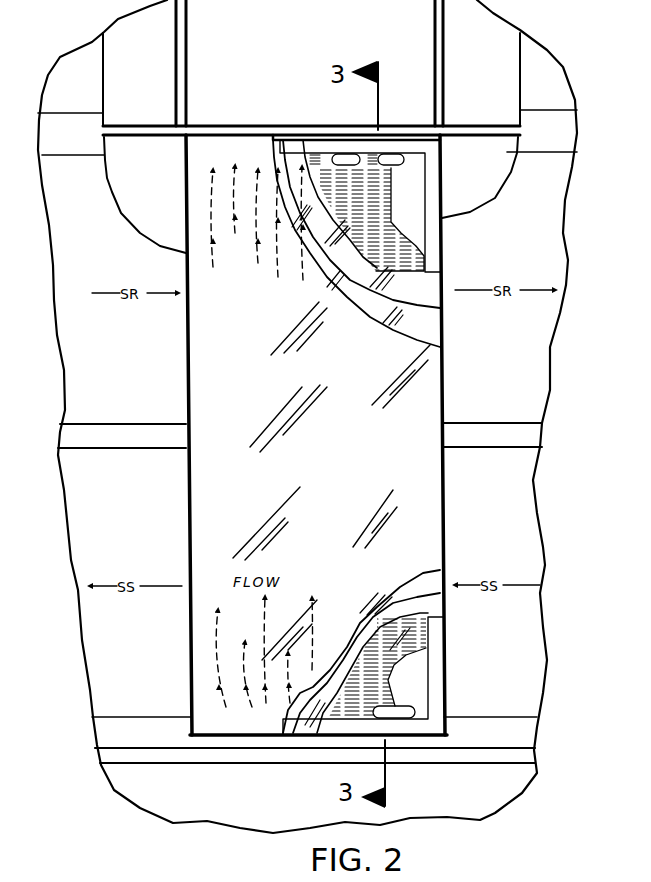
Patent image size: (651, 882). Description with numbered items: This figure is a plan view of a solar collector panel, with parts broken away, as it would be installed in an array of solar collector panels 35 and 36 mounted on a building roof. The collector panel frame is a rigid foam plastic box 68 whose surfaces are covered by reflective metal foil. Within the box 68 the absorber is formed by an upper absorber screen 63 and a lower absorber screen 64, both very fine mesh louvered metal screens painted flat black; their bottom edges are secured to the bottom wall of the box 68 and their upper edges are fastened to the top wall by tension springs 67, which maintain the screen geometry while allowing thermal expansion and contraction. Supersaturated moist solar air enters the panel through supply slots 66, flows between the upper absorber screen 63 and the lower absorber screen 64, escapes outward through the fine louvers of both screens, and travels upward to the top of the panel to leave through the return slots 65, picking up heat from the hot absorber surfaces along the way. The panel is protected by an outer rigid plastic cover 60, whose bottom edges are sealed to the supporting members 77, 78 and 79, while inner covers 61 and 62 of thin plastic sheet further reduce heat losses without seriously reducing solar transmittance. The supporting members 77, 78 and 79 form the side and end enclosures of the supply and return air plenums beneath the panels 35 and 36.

The solar collector panel 35 is at (146, 213).
The solar collector panel 36 is at (151, 55).
The outer rigid plastic cover 60 is at (361, 322).
The inner cover 61 is at (326, 272).
The inner cover 62 is at (366, 276).
The upper absorber screen 63 is at (398, 191).
The lower absorber screen 64 is at (406, 232).
The return slot 65 is at (394, 164).
The supply slot 66 is at (390, 706).
The tension spring 67 is at (363, 151).
The rigid foam plastic box 68 is at (433, 677).
The supporting member 77 is at (517, 712).
The supporting member 78 is at (518, 423).
The supporting member 79 is at (551, 109).